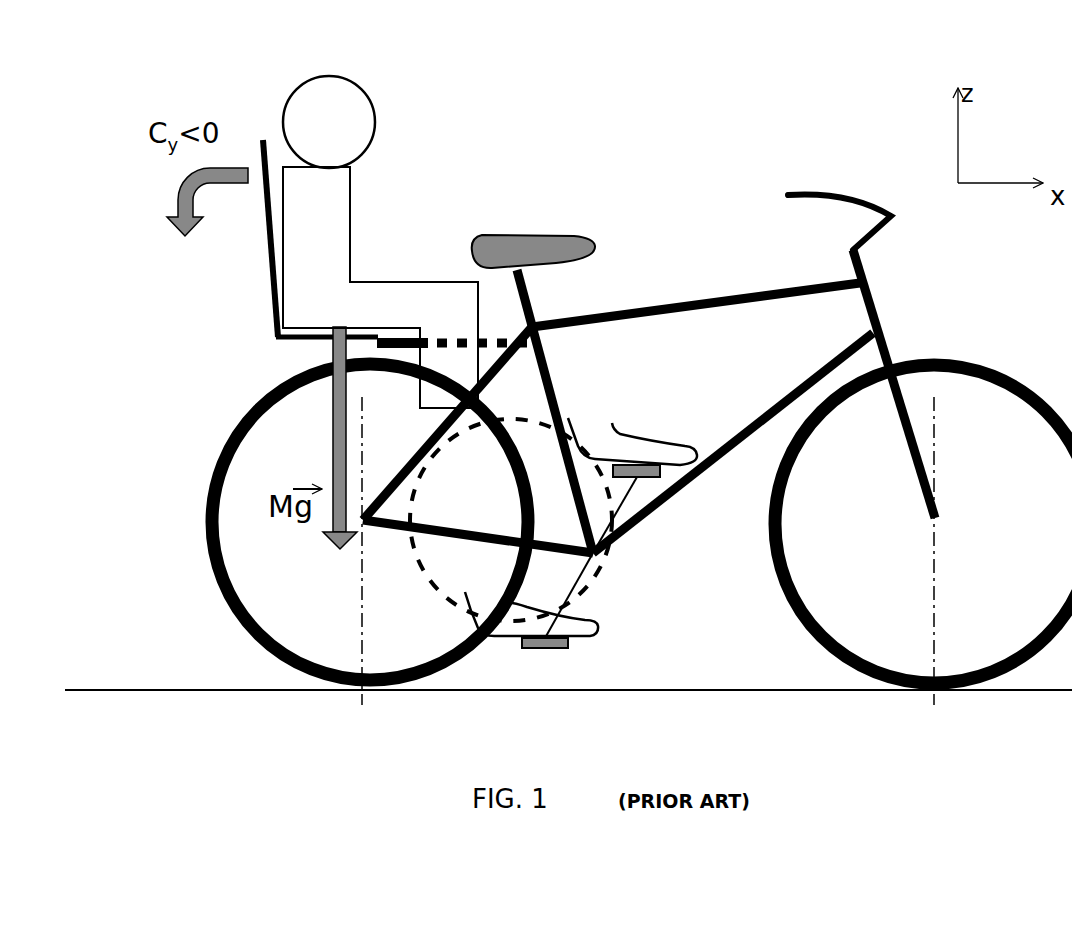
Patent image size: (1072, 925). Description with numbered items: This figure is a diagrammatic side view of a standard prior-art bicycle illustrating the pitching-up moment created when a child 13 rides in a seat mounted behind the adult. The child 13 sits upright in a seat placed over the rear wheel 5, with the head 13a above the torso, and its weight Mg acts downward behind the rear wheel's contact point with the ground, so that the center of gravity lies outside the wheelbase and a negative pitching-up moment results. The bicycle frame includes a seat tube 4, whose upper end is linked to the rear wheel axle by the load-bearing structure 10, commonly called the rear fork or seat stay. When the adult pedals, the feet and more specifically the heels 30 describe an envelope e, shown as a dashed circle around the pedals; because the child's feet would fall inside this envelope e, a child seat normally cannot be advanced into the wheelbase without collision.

The seat tube 4 is at (559, 393).
The rear wheel 5 is at (218, 447).
The load-bearing structure 10 is at (382, 487).
The child 13 is at (338, 270).
The child head 13a is at (302, 110).
The heels 30 is at (582, 450).
The envelope e is at (508, 637).